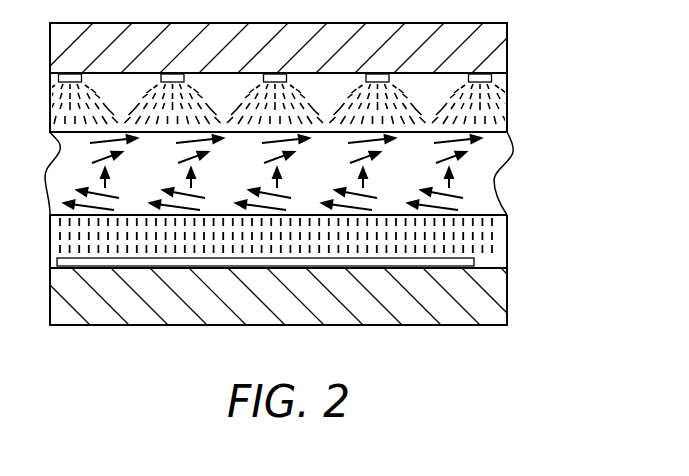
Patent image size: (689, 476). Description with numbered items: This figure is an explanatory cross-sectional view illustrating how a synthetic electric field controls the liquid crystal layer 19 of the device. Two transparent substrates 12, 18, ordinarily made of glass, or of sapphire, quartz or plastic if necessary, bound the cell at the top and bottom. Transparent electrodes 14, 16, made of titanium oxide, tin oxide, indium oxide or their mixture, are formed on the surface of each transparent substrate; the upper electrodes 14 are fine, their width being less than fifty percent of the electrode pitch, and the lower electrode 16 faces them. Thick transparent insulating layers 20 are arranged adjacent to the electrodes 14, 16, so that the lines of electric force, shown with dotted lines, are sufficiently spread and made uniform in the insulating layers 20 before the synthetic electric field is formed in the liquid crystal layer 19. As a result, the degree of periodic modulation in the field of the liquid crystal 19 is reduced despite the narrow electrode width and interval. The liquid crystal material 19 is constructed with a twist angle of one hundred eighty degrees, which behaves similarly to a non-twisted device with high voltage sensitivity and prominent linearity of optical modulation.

The transparent substrate 12 is at (503, 53).
The transparent electrode 14 is at (498, 94).
The insulating layer 20 is at (505, 117).
The liquid crystal layer 19 is at (496, 176).
The transparent electrode 16 is at (503, 263).
The transparent substrate 18 is at (503, 304).